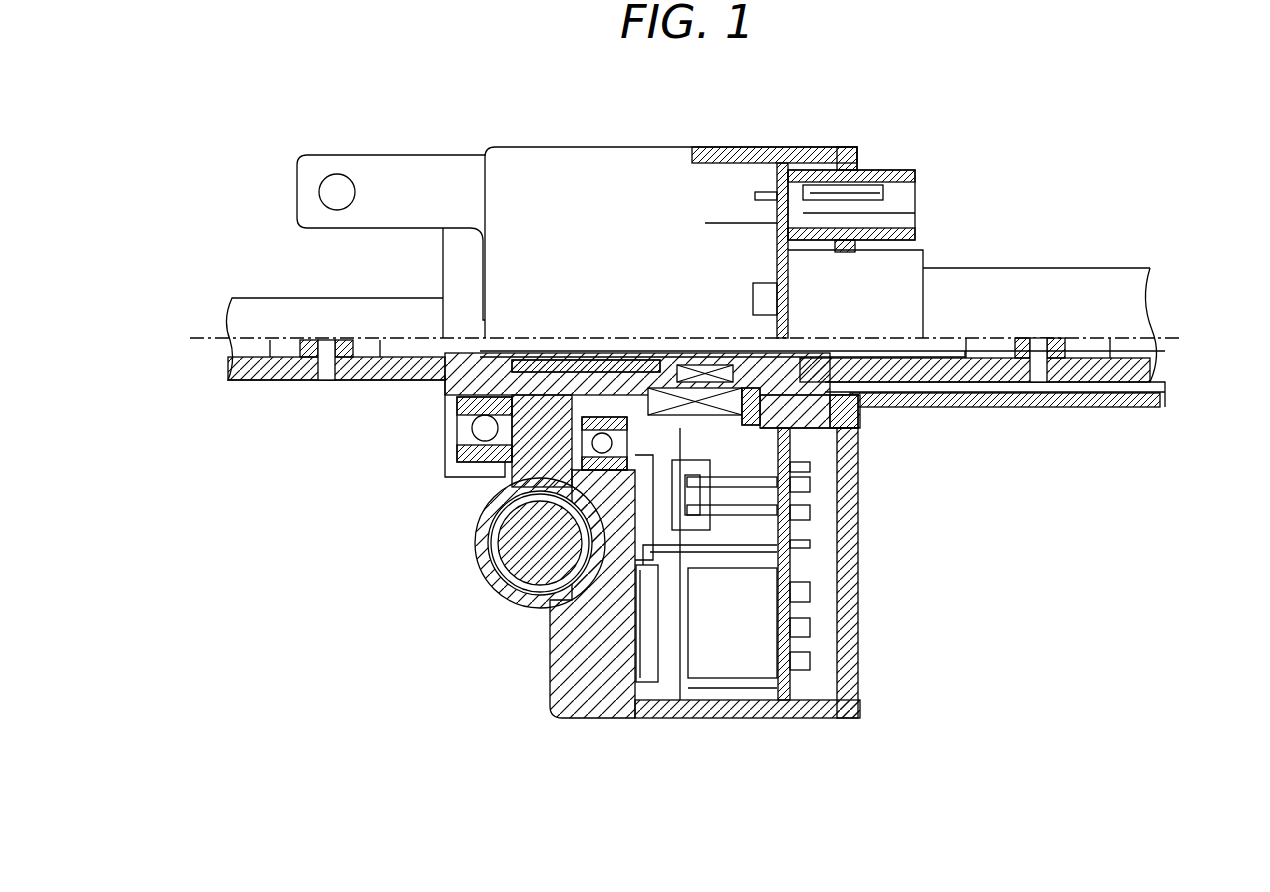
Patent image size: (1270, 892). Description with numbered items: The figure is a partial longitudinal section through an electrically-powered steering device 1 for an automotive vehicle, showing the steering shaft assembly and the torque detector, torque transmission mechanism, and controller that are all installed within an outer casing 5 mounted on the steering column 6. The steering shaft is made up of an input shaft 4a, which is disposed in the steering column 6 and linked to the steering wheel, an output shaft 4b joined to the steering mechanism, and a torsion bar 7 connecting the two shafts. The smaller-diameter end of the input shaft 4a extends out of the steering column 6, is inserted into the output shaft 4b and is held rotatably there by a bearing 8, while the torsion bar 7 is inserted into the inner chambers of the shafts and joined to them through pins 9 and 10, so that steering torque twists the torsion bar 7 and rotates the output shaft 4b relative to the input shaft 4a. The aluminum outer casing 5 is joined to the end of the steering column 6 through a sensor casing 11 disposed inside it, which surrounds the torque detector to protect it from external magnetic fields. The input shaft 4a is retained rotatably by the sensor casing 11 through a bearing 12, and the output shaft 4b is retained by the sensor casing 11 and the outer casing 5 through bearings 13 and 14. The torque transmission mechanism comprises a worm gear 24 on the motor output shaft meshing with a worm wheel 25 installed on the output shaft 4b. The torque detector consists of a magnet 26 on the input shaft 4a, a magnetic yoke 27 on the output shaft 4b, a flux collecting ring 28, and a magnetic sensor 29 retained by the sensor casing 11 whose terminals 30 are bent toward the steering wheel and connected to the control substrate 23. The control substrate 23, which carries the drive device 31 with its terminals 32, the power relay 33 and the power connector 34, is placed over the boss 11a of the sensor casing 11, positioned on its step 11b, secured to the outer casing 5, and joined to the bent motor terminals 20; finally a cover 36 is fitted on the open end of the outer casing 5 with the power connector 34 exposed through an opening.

The electrically-powered steering device 1 is at (520, 132).
The input shaft 4a is at (1166, 362).
The output shaft 4b is at (246, 300).
The outer casing 5 is at (580, 712).
The steering column 6 is at (1112, 282).
The torsion bar 7 is at (950, 336).
The bearing 8 is at (578, 360).
The pin 9 is at (1040, 388).
The pin 10 is at (327, 366).
The sensor casing 11 is at (680, 656).
The boss 11a is at (935, 416).
The step 11b is at (848, 450).
The bearing 12 is at (812, 350).
The bearing 13 is at (603, 432).
The bearing 14 is at (474, 430).
The motor terminals 20 is at (830, 540).
The control substrate 23 is at (800, 704).
The worm gear 24 is at (535, 548).
The worm wheel 25 is at (515, 482).
The magnet 26 is at (690, 382).
The magnetic yoke 27 is at (660, 412).
The flux collecting ring 28 is at (792, 500).
The magnetic sensor 29 is at (744, 420).
The terminals 30 is at (802, 462).
The drive device 31 is at (645, 690).
The terminals 32 is at (810, 550).
The power relay 33 is at (740, 688).
The power connector 34 is at (896, 168).
The cover 36 is at (846, 652).